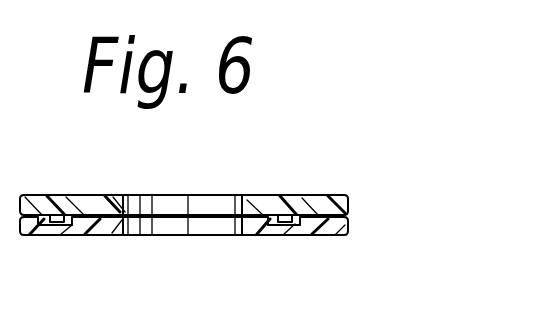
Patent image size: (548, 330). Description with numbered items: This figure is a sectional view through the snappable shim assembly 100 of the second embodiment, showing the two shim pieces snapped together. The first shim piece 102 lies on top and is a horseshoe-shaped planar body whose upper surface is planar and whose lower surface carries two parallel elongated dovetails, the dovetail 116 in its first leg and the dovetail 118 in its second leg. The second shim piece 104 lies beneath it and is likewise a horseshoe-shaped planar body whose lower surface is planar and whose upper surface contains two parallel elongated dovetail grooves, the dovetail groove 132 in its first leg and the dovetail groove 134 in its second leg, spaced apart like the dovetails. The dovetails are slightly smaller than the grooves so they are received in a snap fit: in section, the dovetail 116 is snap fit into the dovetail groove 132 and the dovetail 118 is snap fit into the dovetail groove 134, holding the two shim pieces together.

The snappable shim assembly 100 is at (345, 113).
The first shim piece 102 is at (347, 202).
The second shim piece 104 is at (347, 222).
The elongated dovetail 116 is at (78, 218).
The elongated dovetail 118 is at (300, 219).
The elongated dovetail groove 132 is at (61, 213).
The elongated dovetail groove 134 is at (288, 213).